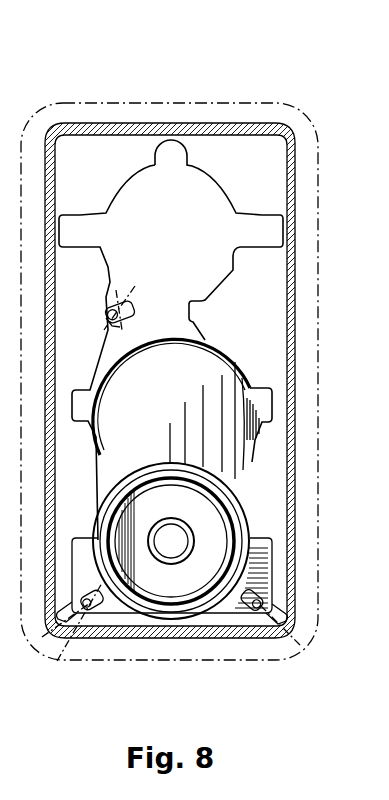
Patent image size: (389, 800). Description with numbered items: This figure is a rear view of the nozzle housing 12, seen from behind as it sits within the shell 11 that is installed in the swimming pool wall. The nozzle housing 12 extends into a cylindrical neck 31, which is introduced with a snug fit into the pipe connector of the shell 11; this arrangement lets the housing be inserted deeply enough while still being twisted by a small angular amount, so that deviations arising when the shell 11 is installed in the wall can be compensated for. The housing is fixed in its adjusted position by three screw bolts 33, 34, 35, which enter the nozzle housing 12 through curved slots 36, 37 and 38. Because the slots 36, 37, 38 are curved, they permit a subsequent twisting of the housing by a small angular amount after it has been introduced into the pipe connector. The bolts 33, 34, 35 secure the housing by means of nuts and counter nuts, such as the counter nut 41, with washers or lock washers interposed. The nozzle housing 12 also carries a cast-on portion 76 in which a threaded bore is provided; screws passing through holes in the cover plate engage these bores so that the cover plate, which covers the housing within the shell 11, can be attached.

The shell 11 is at (251, 92).
The nozzle housing 12 is at (235, 190).
The cast-on portion 76 is at (66, 226).
The screw bolt 33 is at (106, 300).
The curved slot 36 is at (109, 319).
The counter nut 41 is at (119, 298).
The cylindrical neck 31 is at (228, 509).
The screw bolt 35 is at (70, 612).
The curved slot 38 is at (99, 596).
The curved slot 37 is at (243, 617).
The screw bolt 34 is at (258, 616).